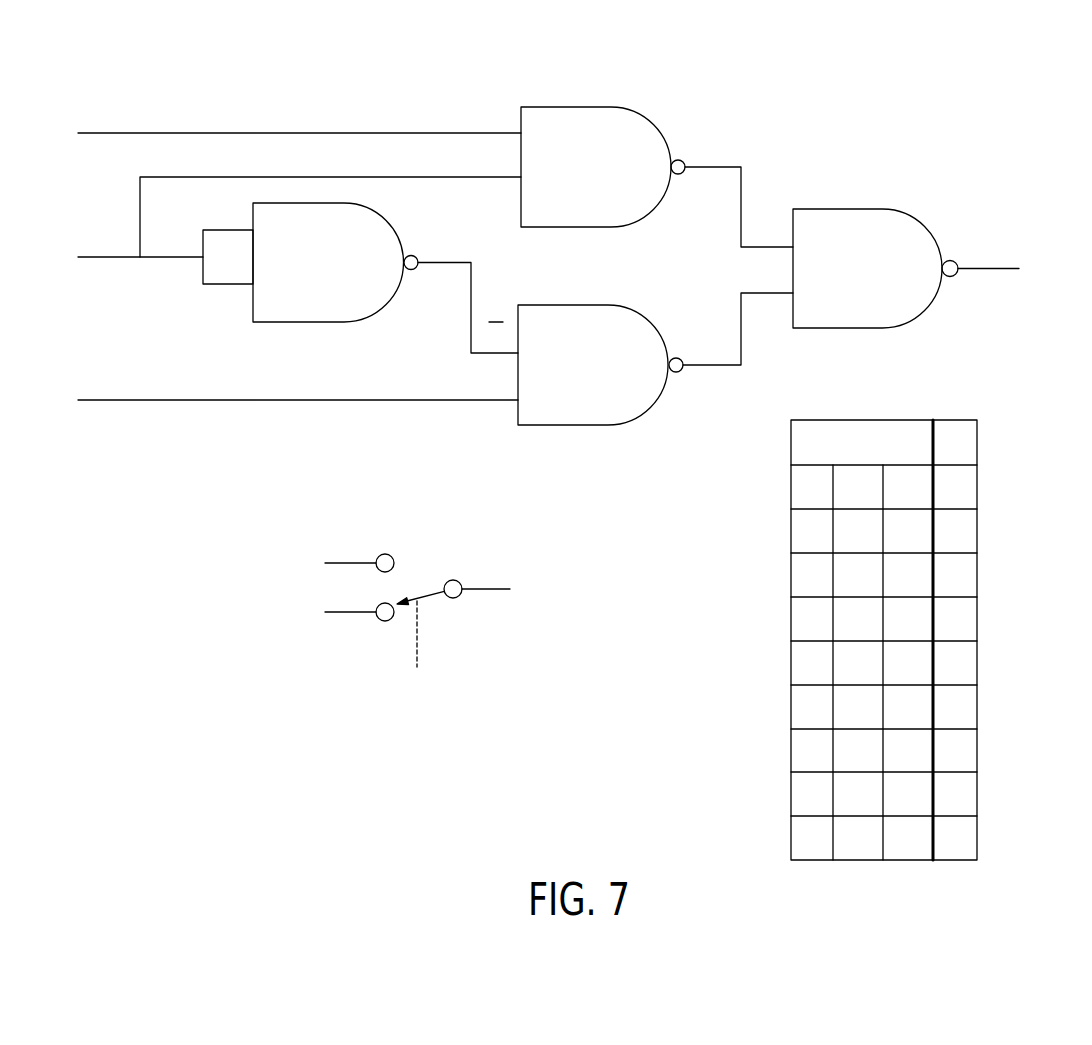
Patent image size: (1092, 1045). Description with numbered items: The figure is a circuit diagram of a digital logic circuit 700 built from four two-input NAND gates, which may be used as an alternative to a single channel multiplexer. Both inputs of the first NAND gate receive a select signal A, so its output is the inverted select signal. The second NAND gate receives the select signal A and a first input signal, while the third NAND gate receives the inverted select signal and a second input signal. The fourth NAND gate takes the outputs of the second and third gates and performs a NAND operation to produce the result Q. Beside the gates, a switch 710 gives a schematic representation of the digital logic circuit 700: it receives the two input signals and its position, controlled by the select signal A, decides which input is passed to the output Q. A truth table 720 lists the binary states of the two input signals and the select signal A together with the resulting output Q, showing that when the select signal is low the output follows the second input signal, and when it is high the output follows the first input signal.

The digital logic circuit 700 is at (1022, 127).
The switch 710 is at (547, 533).
The truth table 720 is at (1003, 386).